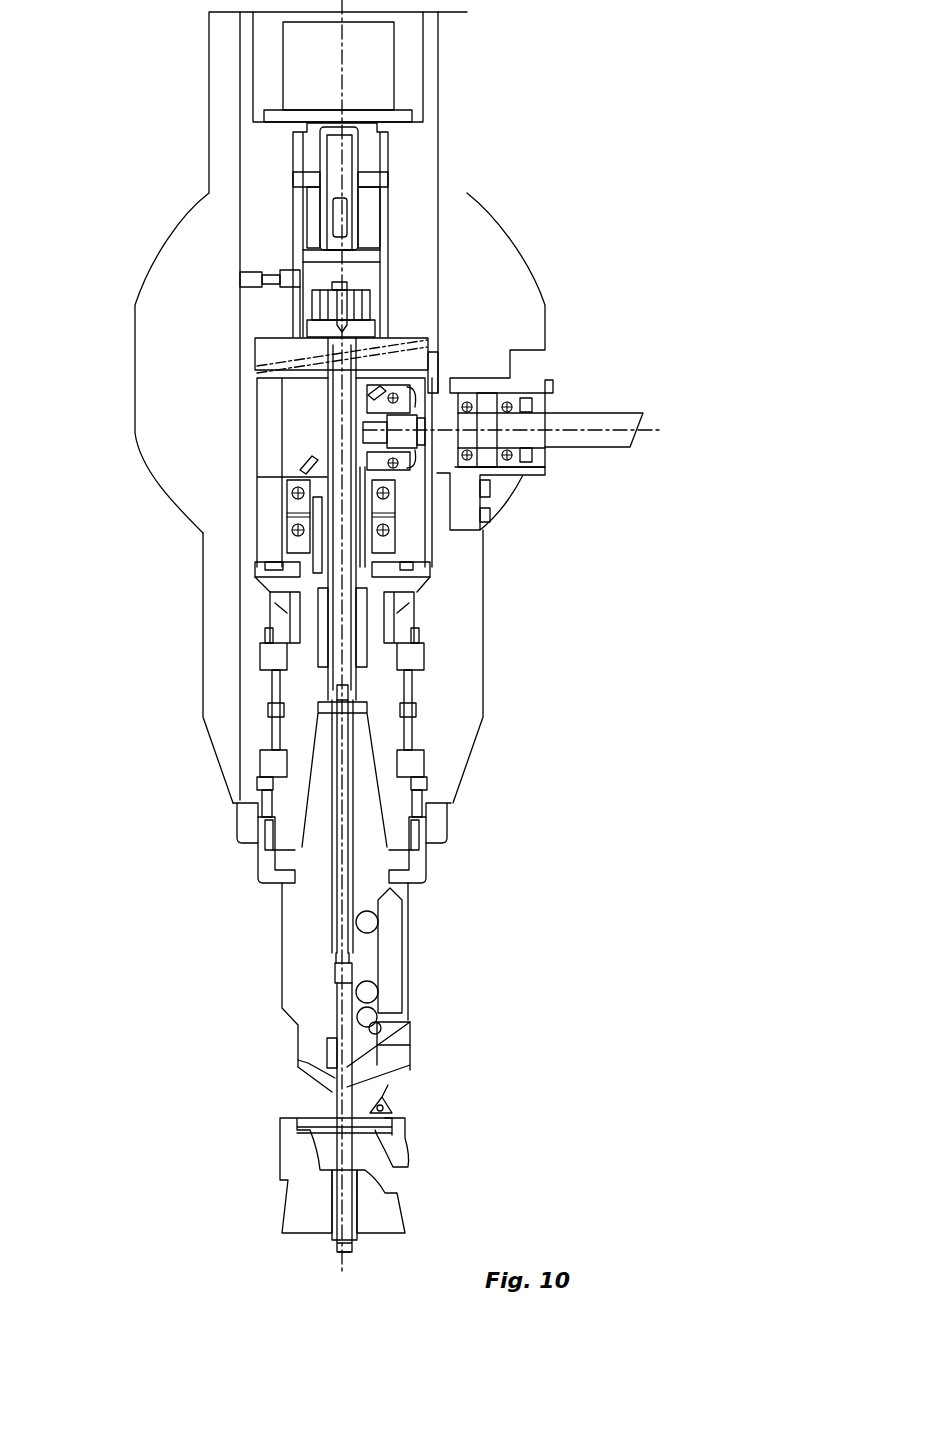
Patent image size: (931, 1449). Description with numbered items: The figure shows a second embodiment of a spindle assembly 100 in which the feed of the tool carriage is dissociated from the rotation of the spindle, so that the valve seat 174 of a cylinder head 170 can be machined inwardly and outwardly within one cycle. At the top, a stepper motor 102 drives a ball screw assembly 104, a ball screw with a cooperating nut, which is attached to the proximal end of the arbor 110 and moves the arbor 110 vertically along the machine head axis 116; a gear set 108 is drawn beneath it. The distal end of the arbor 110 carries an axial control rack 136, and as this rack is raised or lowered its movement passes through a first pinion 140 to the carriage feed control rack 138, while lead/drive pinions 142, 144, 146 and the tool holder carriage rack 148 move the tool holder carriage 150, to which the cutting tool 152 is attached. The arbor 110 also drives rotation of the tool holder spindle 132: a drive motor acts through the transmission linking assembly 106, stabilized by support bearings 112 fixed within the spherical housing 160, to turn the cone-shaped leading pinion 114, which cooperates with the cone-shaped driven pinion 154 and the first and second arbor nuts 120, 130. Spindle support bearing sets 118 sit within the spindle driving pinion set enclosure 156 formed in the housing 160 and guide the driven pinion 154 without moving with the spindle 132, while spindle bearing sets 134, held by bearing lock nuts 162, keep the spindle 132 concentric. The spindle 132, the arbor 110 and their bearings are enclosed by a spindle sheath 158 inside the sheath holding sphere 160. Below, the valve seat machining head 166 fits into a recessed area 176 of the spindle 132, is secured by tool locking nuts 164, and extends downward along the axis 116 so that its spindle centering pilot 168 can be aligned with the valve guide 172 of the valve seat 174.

The spindle assembly 100 is at (133, 110).
The stepper motor 102 is at (368, 68).
The ball screw assembly 104 is at (318, 200).
The transmission linking assembly 106 is at (537, 430).
The gear assembly 108 is at (380, 300).
The arbor 110 is at (352, 388).
The support bearings 112 is at (522, 403).
The cone-shaped leading pinion 114 is at (400, 445).
The machine head axis 116 is at (355, 1253).
The spindle support bearing sets 118 is at (385, 465).
The first arbor nut 120 is at (362, 520).
The second arbor nut 130 is at (365, 605).
The tool holder spindle 132 is at (380, 657).
The spindle bearing sets 134 is at (408, 762).
The axial control rack 136 is at (340, 845).
The carriage feed control rack 138 is at (388, 913).
The first pinion 140 is at (365, 923).
The lead/drive pinion 142 is at (368, 992).
The lead/drive pinion 144 is at (368, 1017).
The lead/drive pinion 146 is at (378, 1028).
The tool holder carriage rack 148 is at (392, 1036).
The tool holder carriage 150 is at (400, 1065).
The cutting tool 152 is at (388, 1105).
The cone-shaped driven pinion 154 is at (300, 470).
The spindle driving pinion set enclosure 156 is at (272, 493).
The spindle sheath 158 is at (258, 607).
The spherical housing 160 is at (220, 650).
The bearing lock nuts 162 is at (245, 818).
The tool locking nuts 164 is at (262, 866).
The valve seat machining head 166 is at (302, 930).
The spindle centering pilot 168 is at (338, 1107).
The cylinder head 170 is at (288, 1158).
The valve guide 172 is at (335, 1198).
The valve seat 174 is at (370, 1133).
The recessed area 176 is at (310, 738).